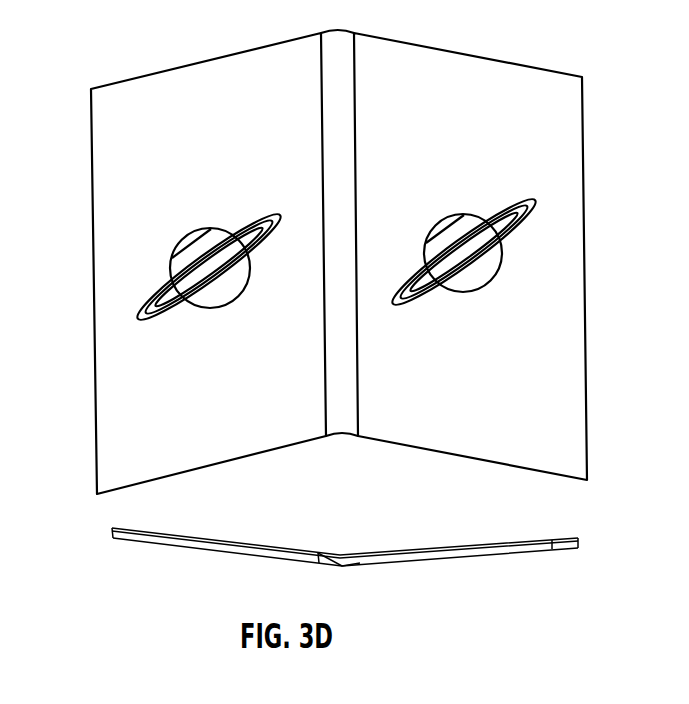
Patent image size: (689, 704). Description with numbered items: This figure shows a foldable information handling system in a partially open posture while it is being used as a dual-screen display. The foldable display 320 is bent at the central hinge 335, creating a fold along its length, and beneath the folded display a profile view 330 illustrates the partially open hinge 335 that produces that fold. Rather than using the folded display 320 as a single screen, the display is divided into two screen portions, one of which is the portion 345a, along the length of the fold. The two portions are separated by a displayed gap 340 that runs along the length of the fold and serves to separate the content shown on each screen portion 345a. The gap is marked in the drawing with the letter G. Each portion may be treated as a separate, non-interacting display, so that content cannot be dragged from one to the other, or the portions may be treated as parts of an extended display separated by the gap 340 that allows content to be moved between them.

The display 320 is at (112, 243).
The portion of the folded display 345a is at (252, 77).
The gap 340 is at (340, 385).
The gap G is at (340, 236).
The profile view 330 is at (110, 531).
The hinge 335 is at (343, 568).